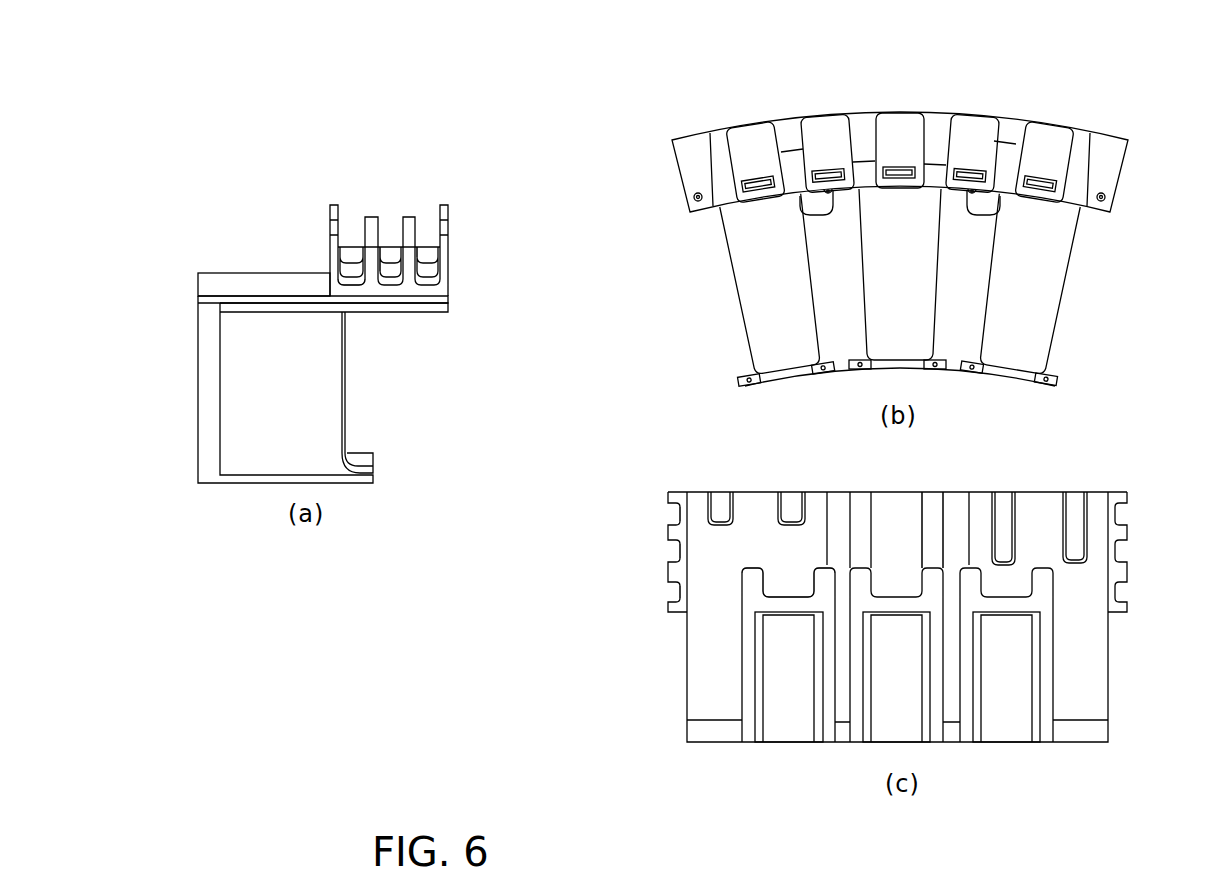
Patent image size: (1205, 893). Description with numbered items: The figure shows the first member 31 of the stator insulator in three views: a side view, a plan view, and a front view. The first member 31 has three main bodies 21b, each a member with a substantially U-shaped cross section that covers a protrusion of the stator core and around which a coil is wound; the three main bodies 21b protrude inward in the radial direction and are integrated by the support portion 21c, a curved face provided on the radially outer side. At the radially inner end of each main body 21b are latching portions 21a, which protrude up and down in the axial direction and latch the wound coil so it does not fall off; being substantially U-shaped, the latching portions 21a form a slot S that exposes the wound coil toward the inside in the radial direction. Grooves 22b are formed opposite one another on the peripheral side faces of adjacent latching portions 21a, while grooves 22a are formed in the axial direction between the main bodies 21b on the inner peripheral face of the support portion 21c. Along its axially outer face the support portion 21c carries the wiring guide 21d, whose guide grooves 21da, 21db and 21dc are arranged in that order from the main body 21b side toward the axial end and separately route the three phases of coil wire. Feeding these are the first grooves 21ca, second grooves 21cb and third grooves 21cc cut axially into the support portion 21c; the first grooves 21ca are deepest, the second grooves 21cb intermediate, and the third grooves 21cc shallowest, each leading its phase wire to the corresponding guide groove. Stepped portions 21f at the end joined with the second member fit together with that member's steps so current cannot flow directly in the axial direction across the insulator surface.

The first member 31 is at (193, 203).
The latching portion 21a is at (368, 464).
The main body 21b is at (346, 365).
The support portion 21c is at (262, 286).
The wiring guide 21d is at (463, 158).
The guide groove 21da is at (351, 246).
The guide groove 21db is at (389, 247).
The guide groove 21dc is at (428, 246).
The stepped portion 21f is at (210, 436).
The groove 22a is at (825, 196).
The groove 22b is at (743, 385).
The third groove 21cc is at (718, 518).
The first groove 21ca is at (930, 515).
The second groove 21cb is at (1075, 516).
The slot S is at (785, 583).